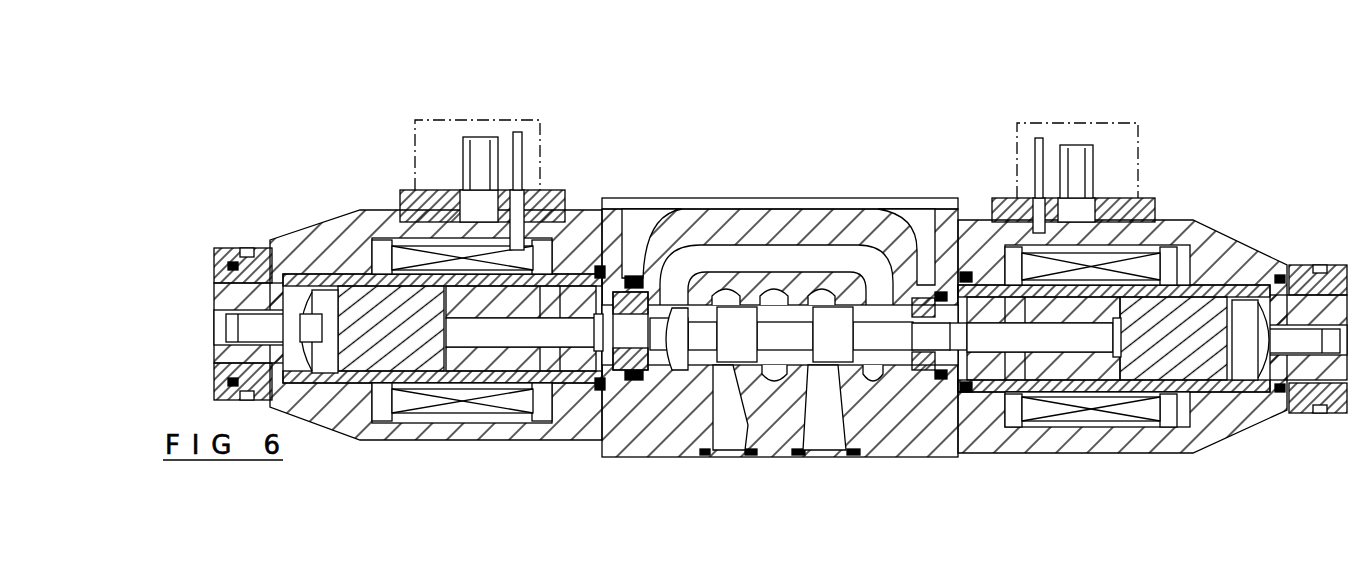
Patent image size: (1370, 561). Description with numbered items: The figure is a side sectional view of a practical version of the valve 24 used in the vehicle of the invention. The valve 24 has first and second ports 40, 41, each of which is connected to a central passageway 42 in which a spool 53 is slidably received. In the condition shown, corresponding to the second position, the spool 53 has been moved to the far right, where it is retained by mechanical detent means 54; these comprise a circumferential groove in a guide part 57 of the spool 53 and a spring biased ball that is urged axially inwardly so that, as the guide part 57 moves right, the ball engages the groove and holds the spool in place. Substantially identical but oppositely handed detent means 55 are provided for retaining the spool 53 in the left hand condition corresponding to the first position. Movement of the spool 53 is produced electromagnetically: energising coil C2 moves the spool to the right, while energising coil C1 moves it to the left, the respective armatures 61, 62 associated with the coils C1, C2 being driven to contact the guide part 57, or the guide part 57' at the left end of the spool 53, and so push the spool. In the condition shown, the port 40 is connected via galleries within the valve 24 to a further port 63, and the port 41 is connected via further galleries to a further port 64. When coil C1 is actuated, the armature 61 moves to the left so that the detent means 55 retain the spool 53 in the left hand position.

The valve 24 is at (884, 202).
The first port 40 is at (740, 452).
The second port 41 is at (828, 455).
The central passageway 42 is at (773, 300).
The spool 53 is at (736, 312).
The mechanical detent means 54 is at (947, 345).
The detent means 55 is at (630, 375).
The guide part 57 is at (953, 407).
The guide part 57' is at (595, 258).
The armature 61 is at (510, 330).
The armature 62 is at (1040, 340).
The further port 63 is at (463, 150).
The further port 64 is at (1093, 170).
The coil C1 is at (1104, 410).
The coil C2 is at (427, 445).